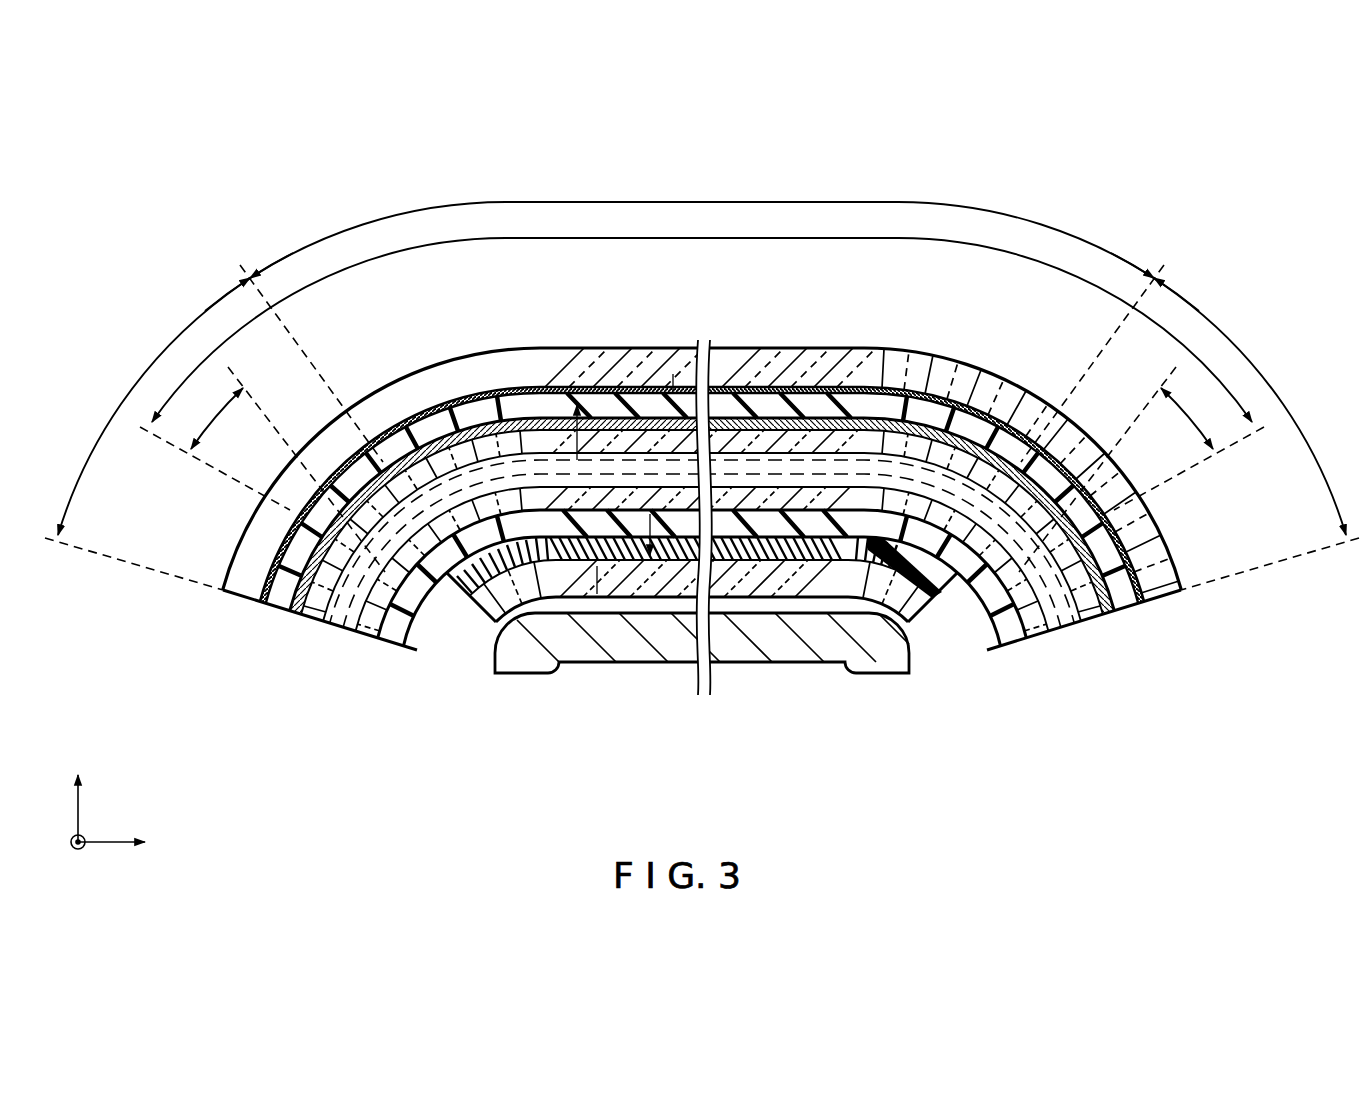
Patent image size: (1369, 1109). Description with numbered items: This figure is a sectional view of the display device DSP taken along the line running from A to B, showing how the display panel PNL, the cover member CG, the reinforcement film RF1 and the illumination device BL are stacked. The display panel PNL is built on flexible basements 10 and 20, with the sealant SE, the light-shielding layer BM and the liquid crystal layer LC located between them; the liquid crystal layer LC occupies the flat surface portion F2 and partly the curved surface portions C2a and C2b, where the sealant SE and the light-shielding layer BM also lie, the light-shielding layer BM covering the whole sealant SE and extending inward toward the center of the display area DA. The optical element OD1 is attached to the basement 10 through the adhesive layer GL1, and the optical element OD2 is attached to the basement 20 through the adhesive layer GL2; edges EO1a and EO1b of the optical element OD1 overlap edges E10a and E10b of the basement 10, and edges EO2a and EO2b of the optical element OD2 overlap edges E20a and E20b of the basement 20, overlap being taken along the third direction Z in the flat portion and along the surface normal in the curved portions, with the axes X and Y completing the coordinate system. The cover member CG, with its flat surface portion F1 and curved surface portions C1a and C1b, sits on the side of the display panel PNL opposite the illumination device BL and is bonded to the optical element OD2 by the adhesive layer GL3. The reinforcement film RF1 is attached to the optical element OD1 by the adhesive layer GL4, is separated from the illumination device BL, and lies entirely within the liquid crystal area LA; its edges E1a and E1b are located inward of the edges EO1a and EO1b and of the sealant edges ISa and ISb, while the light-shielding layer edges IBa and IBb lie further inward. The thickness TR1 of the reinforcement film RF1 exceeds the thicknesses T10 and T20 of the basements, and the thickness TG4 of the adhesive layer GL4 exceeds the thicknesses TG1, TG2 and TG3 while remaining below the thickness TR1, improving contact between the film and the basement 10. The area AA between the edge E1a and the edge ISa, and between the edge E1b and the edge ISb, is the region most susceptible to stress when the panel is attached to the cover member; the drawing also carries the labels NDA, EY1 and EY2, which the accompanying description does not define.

The line A-B A is at (104, 177).
The line A- B is at (1290, 177).
The display device DSP is at (291, 233).
The display area DA is at (702, 228).
The liquid crystal area LA is at (702, 319).
The non-display area NDA is at (133, 398).
The area AA is at (207, 432).
The edge of sealant ISa is at (386, 568).
The edge of light-shielding layer IBa is at (416, 482).
The curved surface portion C1a is at (305, 476).
The curved surface portion C2a is at (288, 562).
The edge of reinforcement film E1a is at (471, 583).
The thickness of basement T20 is at (537, 388).
The thickness of adhesive layer TG2 is at (600, 395).
The thickness of adhesive layer TG3 is at (677, 386).
The flat surface portion F1 is at (758, 364).
The flat surface portion F2 is at (767, 408).
The liquid crystal layer LC is at (888, 468).
The edge of reinforcement film E1b is at (936, 586).
The edge of light-shielding layer IBb is at (992, 500).
The edge of sealant ISb is at (1020, 568).
The curved surface portion C1b is at (1095, 470).
The curved surface portion C2b is at (1097, 511).
The cover member CG is at (1124, 537).
The adhesive layer GL3 is at (1132, 553).
The display panel PNL is at (1152, 580).
The first end edge EY1 is at (218, 598).
The edge of optical element EO2a is at (273, 612).
The edge of basement E20a is at (303, 629).
The light-shielding layer BM is at (330, 622).
The sealant SE is at (350, 619).
The edge of basement E10a is at (380, 649).
The edge of optical element EO1a is at (417, 659).
The thickness of basement T10 is at (488, 590).
The thickness of reinforcement film TR1 is at (583, 578).
The thickness of adhesive layer TG4 is at (627, 558).
The thickness of adhesive layer TG1 is at (645, 560).
The illumination device BL is at (735, 645).
The reinforcement film RF1 is at (790, 600).
The adhesive layer GL4 is at (840, 575).
The optical element OD1 is at (996, 657).
The adhesive layer GL1 is at (1030, 642).
The edge of optical element EO1b is at (1000, 652).
The basement 10 is at (1038, 642).
The edge of basement E10b is at (1057, 625).
The basement 20 is at (1104, 627).
The edge of basement E20b is at (1123, 612).
The adhesive layer GL2 is at (1130, 614).
The edge of optical element EO2b is at (1129, 620).
The optical element OD2 is at (1173, 592).
The second end edge EY2 is at (1193, 598).
The X axis X is at (125, 844).
The Y axis Y is at (66, 844).
The third direction Z is at (77, 791).